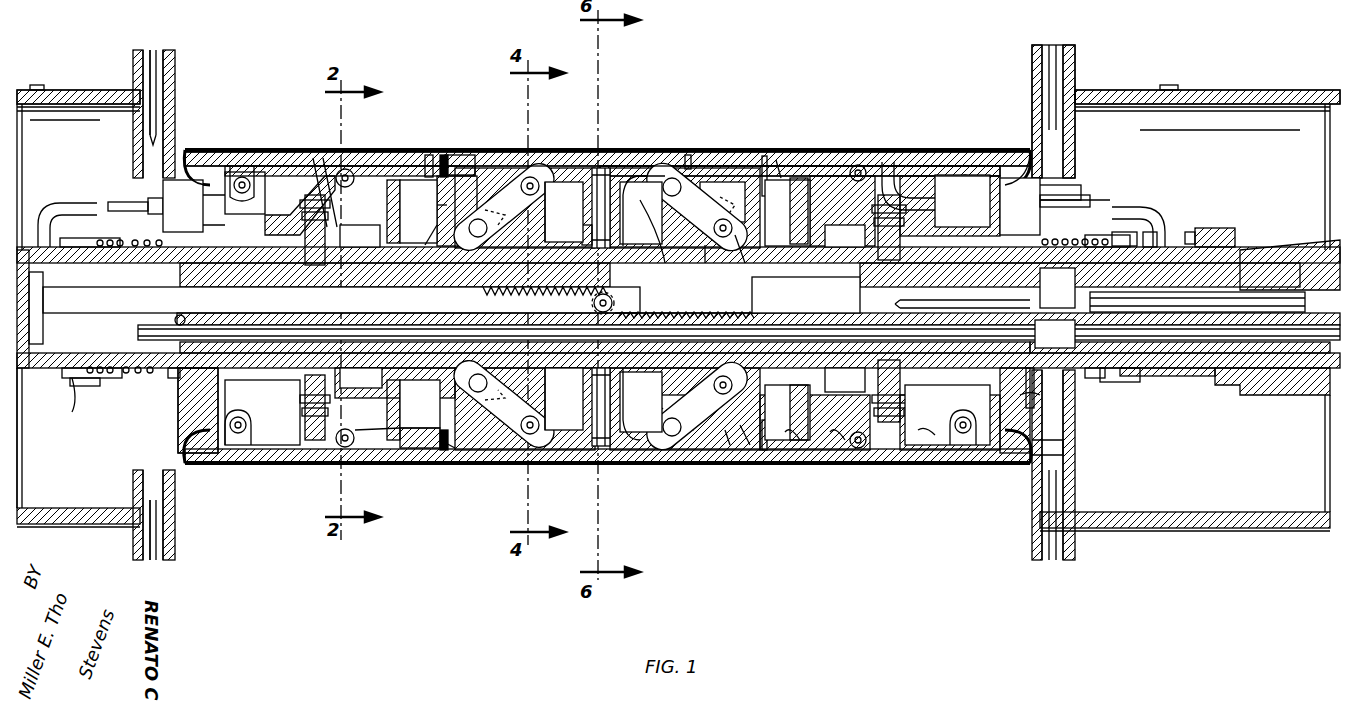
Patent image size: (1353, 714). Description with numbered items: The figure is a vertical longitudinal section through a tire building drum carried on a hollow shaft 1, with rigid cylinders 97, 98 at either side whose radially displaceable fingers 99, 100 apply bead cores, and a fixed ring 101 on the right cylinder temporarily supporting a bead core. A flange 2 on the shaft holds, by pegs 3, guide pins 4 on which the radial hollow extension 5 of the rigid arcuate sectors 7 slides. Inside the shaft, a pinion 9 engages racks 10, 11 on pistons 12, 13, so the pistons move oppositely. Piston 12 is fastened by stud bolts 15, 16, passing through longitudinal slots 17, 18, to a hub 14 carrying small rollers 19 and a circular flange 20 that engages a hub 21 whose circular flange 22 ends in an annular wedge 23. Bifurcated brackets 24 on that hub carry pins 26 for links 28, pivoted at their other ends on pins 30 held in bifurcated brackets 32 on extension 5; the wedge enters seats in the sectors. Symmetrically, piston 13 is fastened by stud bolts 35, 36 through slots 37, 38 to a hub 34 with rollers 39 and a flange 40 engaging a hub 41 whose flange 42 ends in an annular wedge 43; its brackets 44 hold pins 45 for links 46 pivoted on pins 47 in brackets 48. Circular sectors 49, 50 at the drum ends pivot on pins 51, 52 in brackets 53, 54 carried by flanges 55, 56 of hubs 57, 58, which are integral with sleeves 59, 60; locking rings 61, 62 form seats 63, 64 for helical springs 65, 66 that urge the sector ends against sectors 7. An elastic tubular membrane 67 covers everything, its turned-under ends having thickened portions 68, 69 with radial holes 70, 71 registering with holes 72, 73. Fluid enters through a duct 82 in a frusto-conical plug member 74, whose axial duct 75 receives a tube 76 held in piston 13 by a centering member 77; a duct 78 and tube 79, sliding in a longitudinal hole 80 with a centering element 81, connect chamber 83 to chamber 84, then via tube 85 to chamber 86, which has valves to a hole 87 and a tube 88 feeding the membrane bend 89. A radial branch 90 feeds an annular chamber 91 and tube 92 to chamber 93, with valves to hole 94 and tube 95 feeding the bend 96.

The hollow shaft 1 is at (48, 372).
The flange 2 is at (622, 232).
The pegs 3 is at (582, 232).
The guide pins 4 is at (596, 172).
The radial hollow extension 5 is at (636, 176).
The rigid arcuate sectors 7 is at (674, 178).
The pinion 9 is at (616, 303).
The rack 10 is at (535, 298).
The rack 11 is at (690, 316).
The piston 12 is at (190, 291).
The piston 13 is at (1038, 340).
The hub 14 is at (282, 372).
The stud bolt 15 is at (312, 200).
The stud bolt 16 is at (305, 408).
The longitudinal slot 17 is at (368, 255).
The longitudinal slot 18 is at (372, 368).
The small rollers 19 is at (350, 172).
The circular flange 20 is at (394, 180).
The hub 21 is at (425, 247).
The circular flange 22 is at (430, 440).
The annular wedge 23 is at (455, 415).
The bifurcated brackets 24 is at (447, 208).
The pins 26 is at (490, 230).
The links 28 is at (510, 200).
The pins 30 is at (532, 178).
The bifurcated brackets 32 is at (538, 209).
The hub 34 is at (947, 415).
The stud bolt 35 is at (898, 200).
The stud bolt 36 is at (896, 420).
The longitudinal slot 37 is at (845, 240).
The longitudinal slot 38 is at (845, 379).
The small rollers 39 is at (858, 165).
The circular flange 40 is at (786, 211).
The hub 41 is at (791, 412).
The circular flange 42 is at (745, 450).
The annular wedge 43 is at (726, 450).
The bifurcated brackets 44 is at (740, 245).
The pins 45 is at (705, 250).
The links 46 is at (700, 388).
The pins 47 is at (688, 165).
The bifurcated brackets 48 is at (660, 250).
The circular sectors 49 is at (462, 165).
The circular sectors 50 is at (800, 168).
The pins 51 is at (244, 176).
The pins 52 is at (965, 175).
The bifurcated brackets 53 is at (238, 200).
The bifurcated brackets 54 is at (975, 200).
The flange 55 is at (200, 425).
The flange 56 is at (975, 450).
The hub 57 is at (190, 380).
The hub 58 is at (1040, 397).
The sleeve 59 is at (165, 240).
The sleeve 60 is at (1045, 240).
The locking ring 61 is at (72, 412).
The locking ring 62 is at (1130, 385).
The seat 63 is at (100, 386).
The seat 64 is at (1098, 382).
The compressed helical spring 65 is at (136, 378).
The compressed helical spring 66 is at (1125, 232).
The elastic tubular membrane 67 is at (295, 152).
The thickened portion 68 is at (429, 155).
The thickened portion 69 is at (778, 160).
The radial holes 70 is at (444, 160).
The radial holes 71 is at (765, 155).
The holes 72 is at (418, 210).
The holes 73 is at (765, 205).
The frusto-conical plug member 74 is at (1166, 350).
The axial duct 75 is at (1275, 340).
The tube 76 is at (895, 301).
The centering member 77 is at (1038, 295).
The duct 78 is at (705, 318).
The tube 79 is at (138, 334).
The longitudinal hole 80 is at (255, 318).
The centering element 81 is at (175, 316).
The duct 82 is at (1275, 262).
The chamber 83 is at (1080, 320).
The chamber 84 is at (55, 215).
The tube 85 is at (120, 202).
The chamber 86 is at (168, 192).
The hole 87 is at (203, 210).
The tube 88 is at (318, 158).
The bend 89 is at (195, 152).
The radial branch 90 is at (1170, 223).
The annular chamber 91 is at (1150, 232).
The tube 92 is at (1170, 212).
The chamber 93 is at (1034, 186).
The hole 94 is at (1002, 206).
The tube 95 is at (908, 200).
The bend 96 is at (1020, 155).
The rigid cylinder 97 is at (68, 90).
The rigid cylinder 98 is at (1275, 92).
The fingers 99 is at (195, 541).
The fingers 100 is at (1040, 75).
The fixed ring 101 is at (1060, 460).